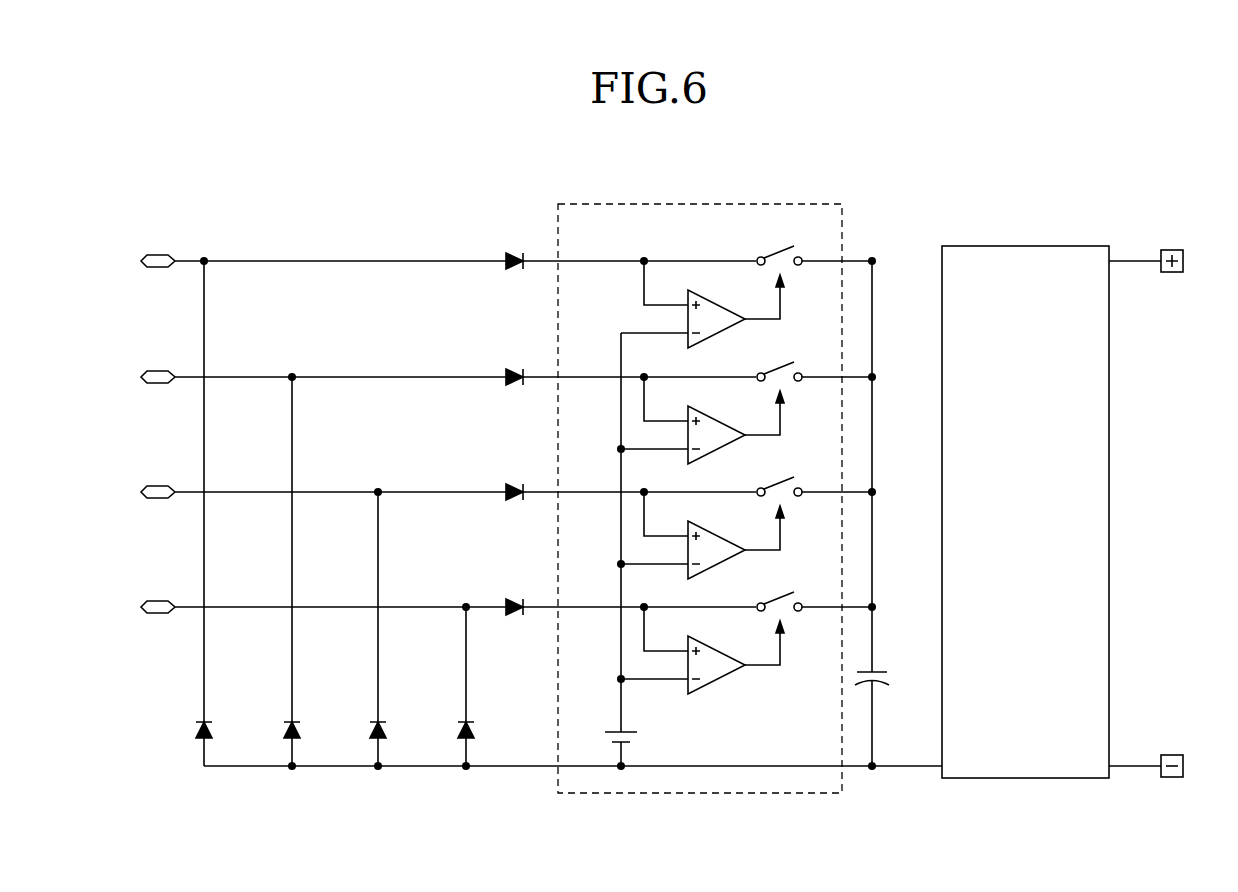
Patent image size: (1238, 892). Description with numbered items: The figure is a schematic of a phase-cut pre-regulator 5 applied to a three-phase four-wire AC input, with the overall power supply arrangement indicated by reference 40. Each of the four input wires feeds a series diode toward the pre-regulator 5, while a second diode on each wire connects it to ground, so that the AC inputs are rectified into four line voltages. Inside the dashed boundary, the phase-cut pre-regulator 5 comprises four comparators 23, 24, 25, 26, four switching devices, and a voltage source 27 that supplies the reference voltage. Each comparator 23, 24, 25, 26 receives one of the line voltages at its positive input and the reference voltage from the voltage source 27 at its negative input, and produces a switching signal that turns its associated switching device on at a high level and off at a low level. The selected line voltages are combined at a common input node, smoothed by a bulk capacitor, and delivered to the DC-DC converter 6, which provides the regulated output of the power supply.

The phase-cut pre-regulator 5 is at (694, 204).
The DC-DC converter 6 is at (1025, 246).
The comparator 23 is at (723, 309).
The comparator 24 is at (723, 425).
The comparator 25 is at (723, 540).
The comparator 26 is at (723, 655).
The voltage source 27 is at (636, 738).
The power supply circuit 40 is at (946, 202).